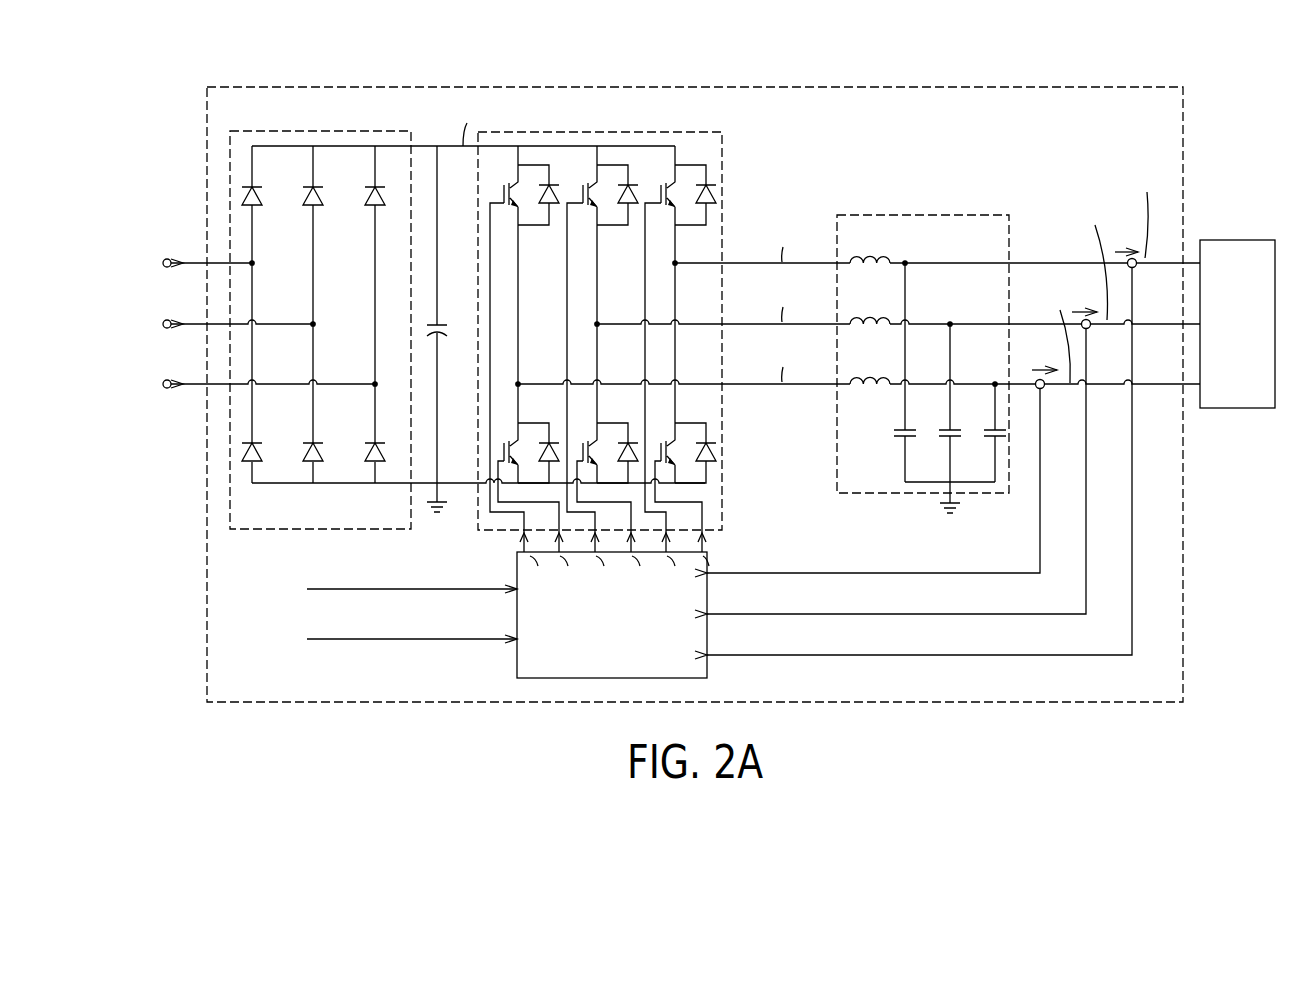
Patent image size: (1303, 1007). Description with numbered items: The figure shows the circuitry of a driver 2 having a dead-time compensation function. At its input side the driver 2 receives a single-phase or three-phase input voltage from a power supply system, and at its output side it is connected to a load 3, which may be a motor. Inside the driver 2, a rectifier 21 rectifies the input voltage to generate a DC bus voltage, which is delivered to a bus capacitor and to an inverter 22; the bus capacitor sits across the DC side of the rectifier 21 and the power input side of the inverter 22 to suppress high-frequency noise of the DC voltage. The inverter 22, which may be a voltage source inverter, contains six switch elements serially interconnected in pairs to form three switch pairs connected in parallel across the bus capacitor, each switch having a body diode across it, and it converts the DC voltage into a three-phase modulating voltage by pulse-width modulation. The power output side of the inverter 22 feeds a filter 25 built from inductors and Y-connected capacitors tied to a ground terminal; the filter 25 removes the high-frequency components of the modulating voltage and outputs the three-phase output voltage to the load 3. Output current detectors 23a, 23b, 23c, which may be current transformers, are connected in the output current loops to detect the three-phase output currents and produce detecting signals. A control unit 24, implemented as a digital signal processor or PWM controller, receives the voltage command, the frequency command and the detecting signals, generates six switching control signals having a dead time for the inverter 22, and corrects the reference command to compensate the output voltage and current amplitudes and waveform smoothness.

The driver 2 is at (1183, 122).
The load 3 is at (1238, 240).
The rectifier 21 is at (330, 131).
The inverter 22 is at (695, 132).
The output current detector 23a is at (1135, 268).
The output current detector 23b is at (1089, 329).
The output current detector 23c is at (1043, 389).
The control unit 24 is at (517, 565).
The filter 25 is at (927, 215).